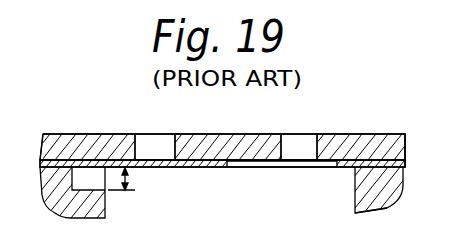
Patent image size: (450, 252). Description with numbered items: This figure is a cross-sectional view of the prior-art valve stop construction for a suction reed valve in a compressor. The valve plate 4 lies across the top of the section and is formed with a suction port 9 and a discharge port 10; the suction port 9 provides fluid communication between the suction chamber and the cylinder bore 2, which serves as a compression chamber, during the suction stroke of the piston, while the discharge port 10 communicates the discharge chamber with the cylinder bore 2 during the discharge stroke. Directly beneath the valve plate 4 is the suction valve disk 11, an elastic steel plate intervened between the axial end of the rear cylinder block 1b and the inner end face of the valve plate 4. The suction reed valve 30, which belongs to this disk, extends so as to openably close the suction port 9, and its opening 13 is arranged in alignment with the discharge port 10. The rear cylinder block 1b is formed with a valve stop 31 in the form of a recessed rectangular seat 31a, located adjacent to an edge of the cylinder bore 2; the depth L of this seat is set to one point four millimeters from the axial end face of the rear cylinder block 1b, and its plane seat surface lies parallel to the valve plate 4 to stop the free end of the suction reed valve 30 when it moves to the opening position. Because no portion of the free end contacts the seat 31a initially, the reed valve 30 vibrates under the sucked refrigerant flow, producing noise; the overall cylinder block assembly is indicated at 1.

The suction reed valve 30 is at (92, 160).
The suction port 9 is at (175, 148).
The discharge port 10 is at (317, 150).
The valve plate 4 is at (365, 147).
The suction valve disk 11 is at (405, 165).
The opening 13 is at (232, 167).
The valve stop 31 is at (75, 176).
The recessed rectangular seat 31a is at (86, 192).
The depth L is at (131, 184).
The cylinder bore 2 is at (355, 201).
The rear cylinder block 1b is at (378, 206).
The assembly 1 is at (427, 171).